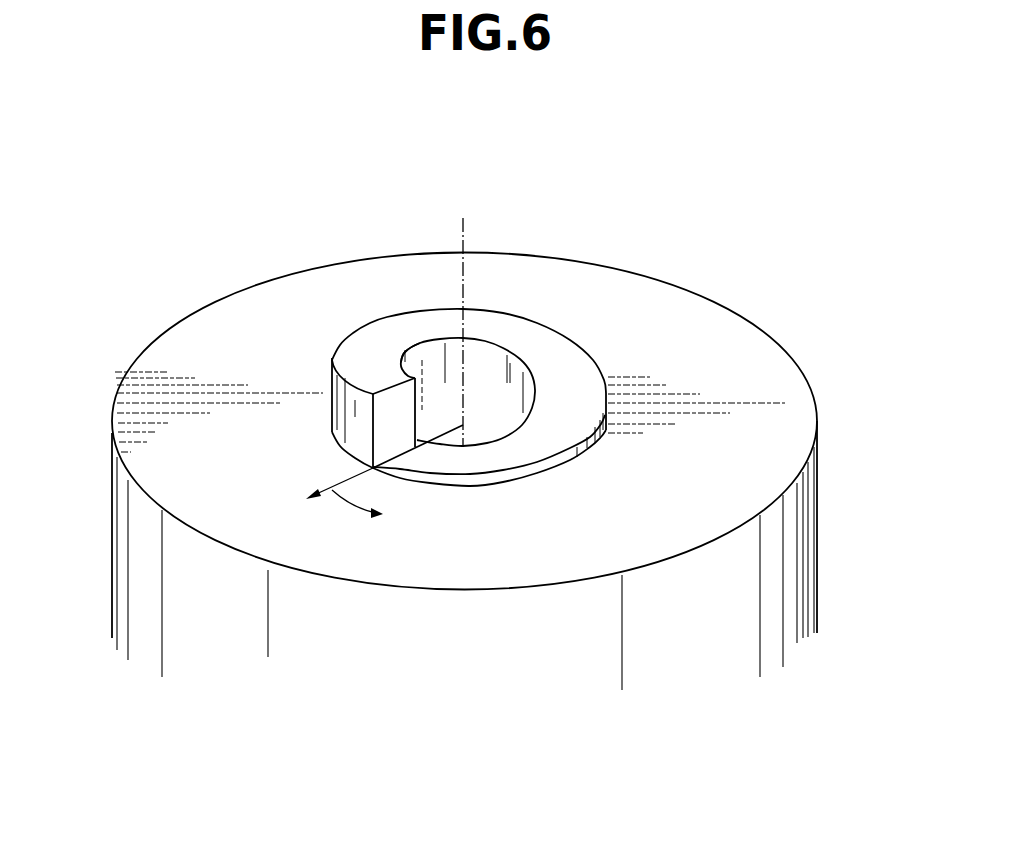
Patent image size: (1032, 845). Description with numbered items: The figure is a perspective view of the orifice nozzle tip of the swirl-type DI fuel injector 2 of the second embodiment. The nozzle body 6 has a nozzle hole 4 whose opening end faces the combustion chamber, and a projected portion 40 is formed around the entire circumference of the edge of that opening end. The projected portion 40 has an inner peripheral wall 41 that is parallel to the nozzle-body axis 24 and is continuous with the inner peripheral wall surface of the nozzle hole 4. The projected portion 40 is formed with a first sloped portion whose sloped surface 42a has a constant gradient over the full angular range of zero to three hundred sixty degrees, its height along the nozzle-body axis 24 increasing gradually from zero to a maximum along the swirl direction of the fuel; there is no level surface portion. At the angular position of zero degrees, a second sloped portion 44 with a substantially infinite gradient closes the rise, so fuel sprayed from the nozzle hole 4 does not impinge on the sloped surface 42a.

The swirl-type DI fuel injector 2 is at (845, 511).
The nozzle body 6 is at (753, 350).
The nozzle-body axis 24 is at (463, 273).
The projected portion 40 is at (329, 322).
The inner peripheral wall 41 is at (417, 362).
The sloped surface 42a is at (503, 330).
The nozzle hole 4 is at (510, 412).
The second sloped portion 44 is at (324, 455).